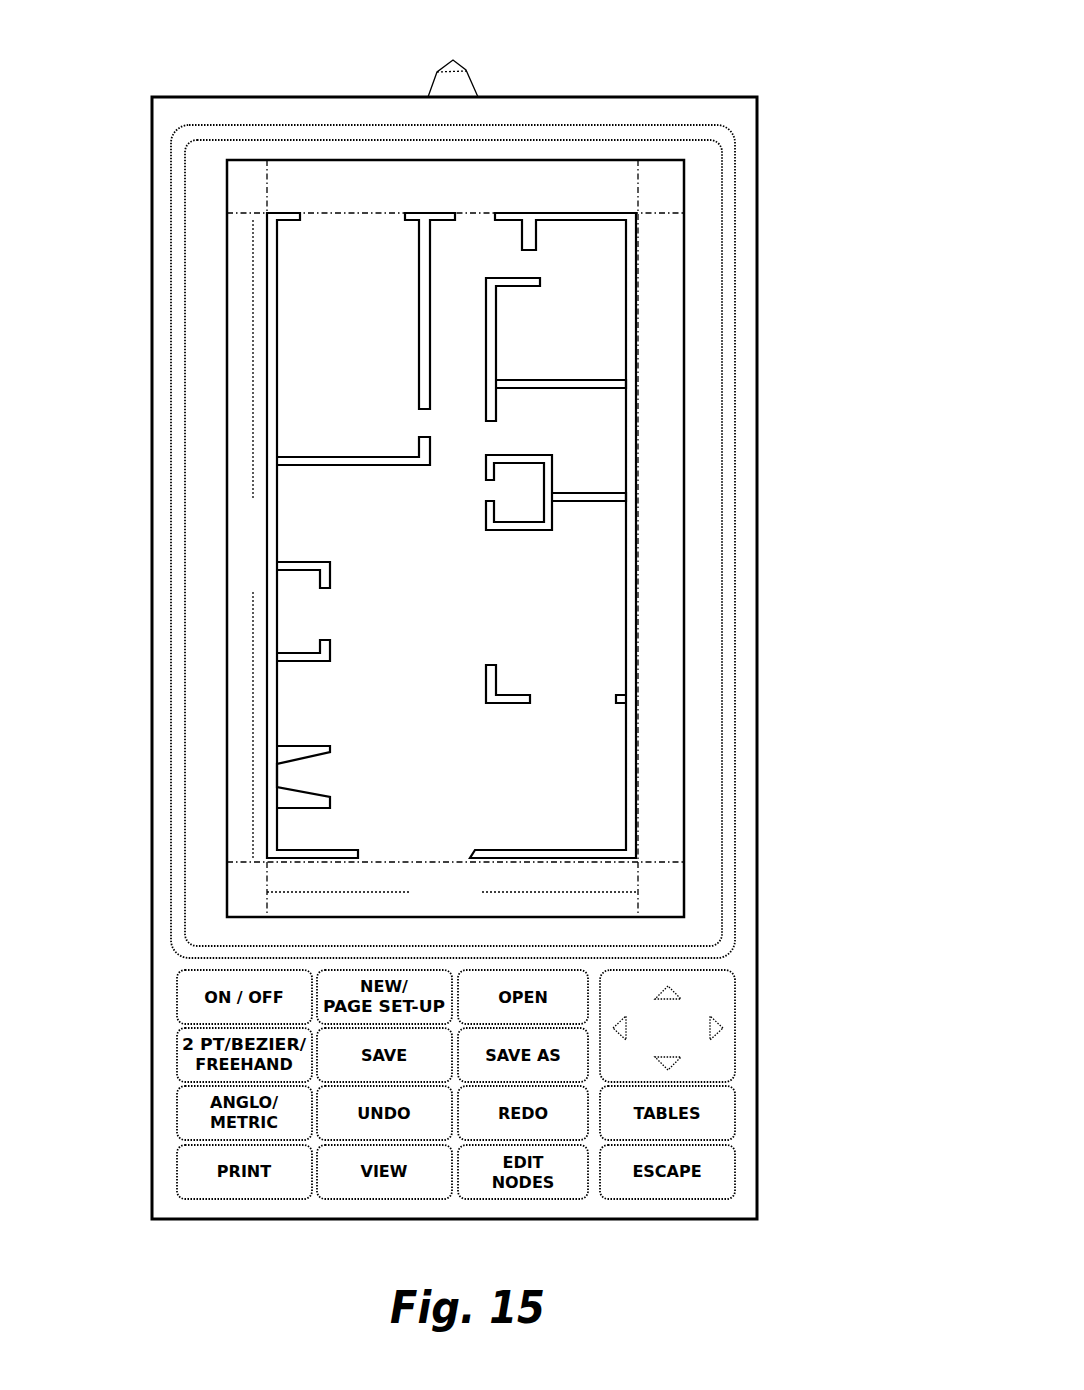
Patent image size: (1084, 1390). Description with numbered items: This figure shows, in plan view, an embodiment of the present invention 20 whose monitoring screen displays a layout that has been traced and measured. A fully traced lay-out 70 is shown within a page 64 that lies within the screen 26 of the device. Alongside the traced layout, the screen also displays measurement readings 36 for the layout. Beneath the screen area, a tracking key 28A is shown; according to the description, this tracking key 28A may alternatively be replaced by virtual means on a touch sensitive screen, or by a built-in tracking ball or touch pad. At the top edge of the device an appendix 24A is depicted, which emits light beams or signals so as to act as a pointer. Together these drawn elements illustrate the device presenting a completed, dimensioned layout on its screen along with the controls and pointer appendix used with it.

The embodiment of the present invention 20 is at (798, 1110).
The appendix 24A is at (474, 78).
The screen 26 is at (724, 368).
The tracking key 28A is at (736, 1040).
The measurement readings 36 is at (240, 538).
The page 64 is at (686, 705).
The fully traced lay-out 70 is at (638, 602).